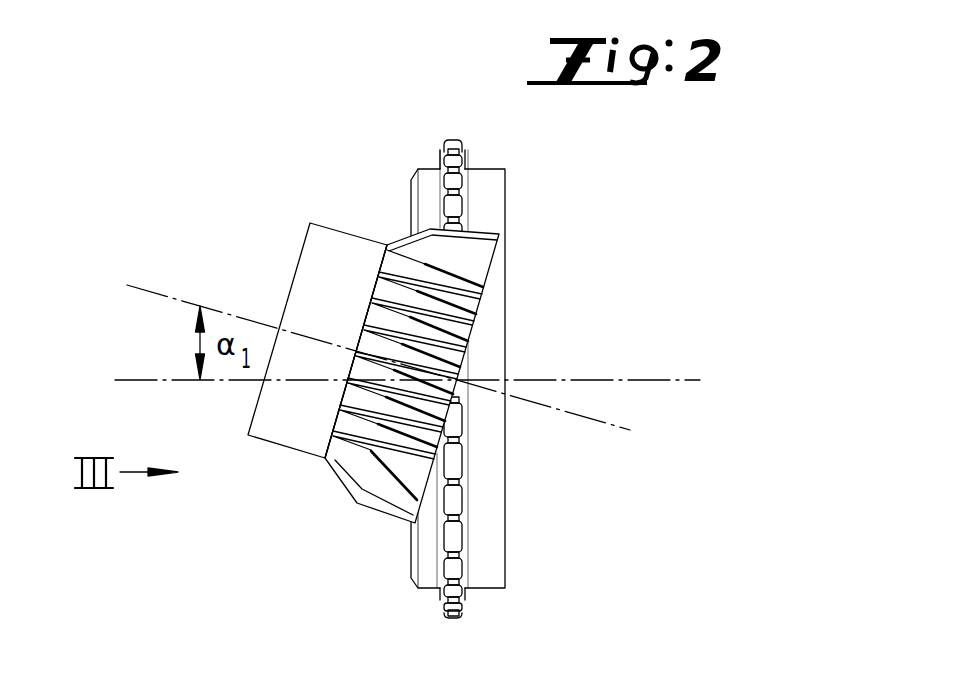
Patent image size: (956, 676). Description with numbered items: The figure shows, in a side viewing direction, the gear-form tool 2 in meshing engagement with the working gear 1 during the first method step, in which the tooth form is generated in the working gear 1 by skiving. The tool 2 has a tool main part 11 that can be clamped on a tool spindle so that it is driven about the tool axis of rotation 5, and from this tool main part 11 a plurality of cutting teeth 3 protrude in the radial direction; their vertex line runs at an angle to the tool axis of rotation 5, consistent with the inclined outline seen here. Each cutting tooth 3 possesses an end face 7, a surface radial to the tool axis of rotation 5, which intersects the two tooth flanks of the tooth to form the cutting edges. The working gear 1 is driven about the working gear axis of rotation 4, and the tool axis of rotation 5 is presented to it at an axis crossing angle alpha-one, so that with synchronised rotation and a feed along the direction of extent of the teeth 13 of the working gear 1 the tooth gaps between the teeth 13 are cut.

The working gear 1 is at (547, 260).
The tool 2 is at (292, 250).
The cutting teeth 3 is at (442, 242).
The working gear axis of rotation 4 is at (167, 380).
The tool axis of rotation 5 is at (178, 298).
The end face 7 is at (470, 323).
The tool main part 11 is at (322, 436).
The teeth 13 is at (452, 140).